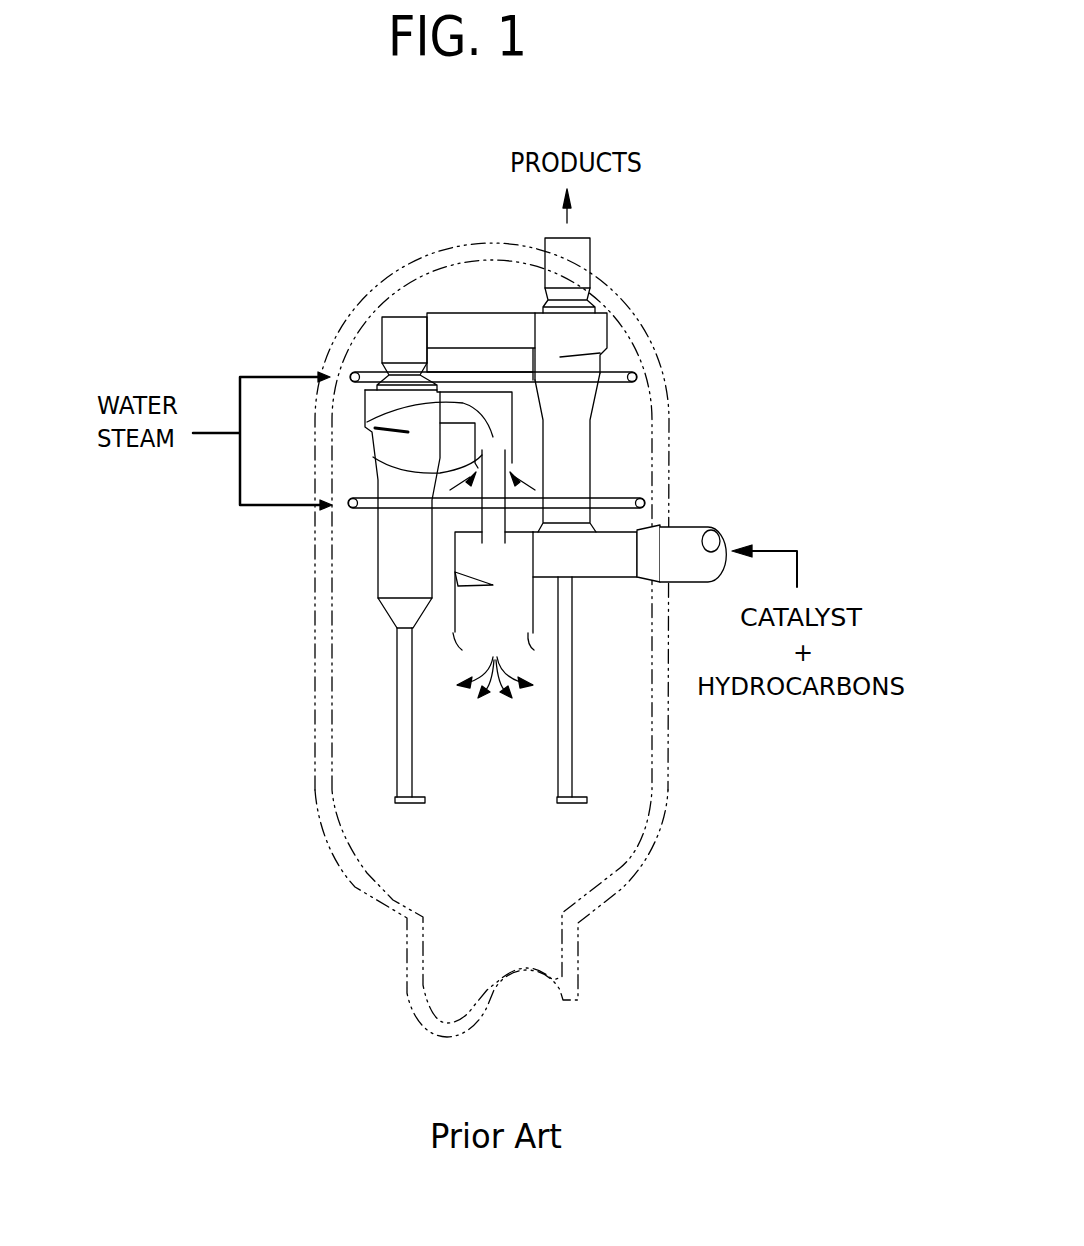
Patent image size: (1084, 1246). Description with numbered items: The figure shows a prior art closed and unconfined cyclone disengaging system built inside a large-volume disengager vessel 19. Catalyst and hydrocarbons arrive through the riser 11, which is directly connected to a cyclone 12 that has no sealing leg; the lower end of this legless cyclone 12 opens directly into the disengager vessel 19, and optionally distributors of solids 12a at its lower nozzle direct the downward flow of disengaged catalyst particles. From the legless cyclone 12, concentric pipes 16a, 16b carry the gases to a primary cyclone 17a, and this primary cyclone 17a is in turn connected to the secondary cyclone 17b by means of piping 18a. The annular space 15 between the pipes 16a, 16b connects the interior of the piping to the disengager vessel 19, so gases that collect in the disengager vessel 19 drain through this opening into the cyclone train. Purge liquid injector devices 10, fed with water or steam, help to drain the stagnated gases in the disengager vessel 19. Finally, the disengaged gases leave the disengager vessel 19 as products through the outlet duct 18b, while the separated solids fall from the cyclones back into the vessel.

The purge liquid injector devices 10 is at (647, 378).
The riser 11 is at (685, 533).
The cyclone 12 is at (490, 617).
The distributors of solids 12a is at (537, 657).
The annular space 15 is at (440, 457).
The pipe 16a is at (495, 497).
The pipe 16b is at (408, 432).
The primary cyclone 17a is at (402, 570).
The secondary cyclone 17b is at (573, 487).
The piping 18a is at (477, 328).
The outlet duct 18b is at (582, 252).
The disengager vessel 19 is at (622, 888).